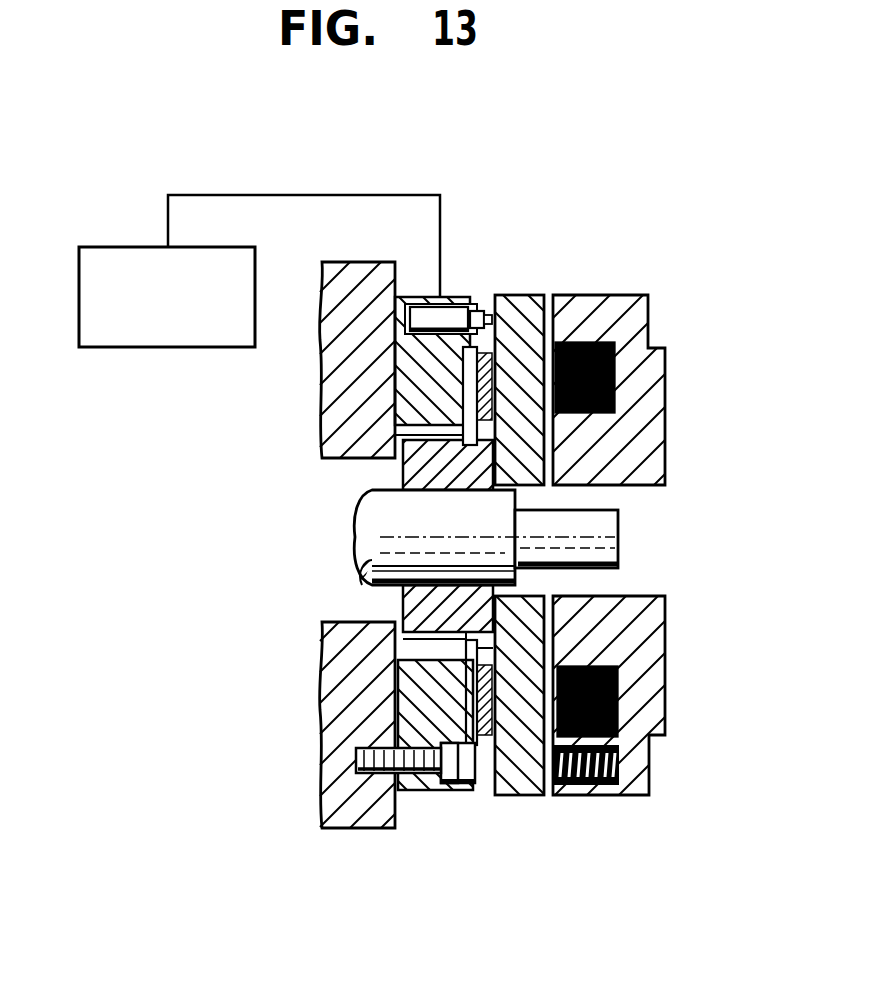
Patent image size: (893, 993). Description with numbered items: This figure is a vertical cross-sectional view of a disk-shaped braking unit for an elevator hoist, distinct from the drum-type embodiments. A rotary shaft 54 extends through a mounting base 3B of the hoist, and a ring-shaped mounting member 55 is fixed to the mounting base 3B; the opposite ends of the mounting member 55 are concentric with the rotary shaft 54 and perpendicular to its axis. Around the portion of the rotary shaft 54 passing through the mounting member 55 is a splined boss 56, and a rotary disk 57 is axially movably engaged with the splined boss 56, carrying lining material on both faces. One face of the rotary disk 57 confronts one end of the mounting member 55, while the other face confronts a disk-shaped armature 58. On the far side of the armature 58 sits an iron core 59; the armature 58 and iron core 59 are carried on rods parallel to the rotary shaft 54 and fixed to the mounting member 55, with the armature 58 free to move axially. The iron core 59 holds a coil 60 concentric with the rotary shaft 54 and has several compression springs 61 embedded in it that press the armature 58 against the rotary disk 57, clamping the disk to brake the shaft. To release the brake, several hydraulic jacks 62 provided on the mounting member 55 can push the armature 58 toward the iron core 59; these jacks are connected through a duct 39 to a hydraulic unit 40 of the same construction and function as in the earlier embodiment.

The mounting base 3B is at (358, 829).
The duct 39 is at (380, 195).
The hydraulic unit 40 is at (118, 247).
The rotary shaft 54 is at (618, 540).
The mounting member 55 is at (428, 793).
The splined boss 56 is at (405, 598).
The rotary disk 57 is at (484, 776).
The armature 58 is at (527, 797).
The iron core 59 is at (665, 668).
The coil 60 is at (625, 334).
The compression springs 61 is at (607, 786).
The hydraulic jacks 62 is at (478, 300).